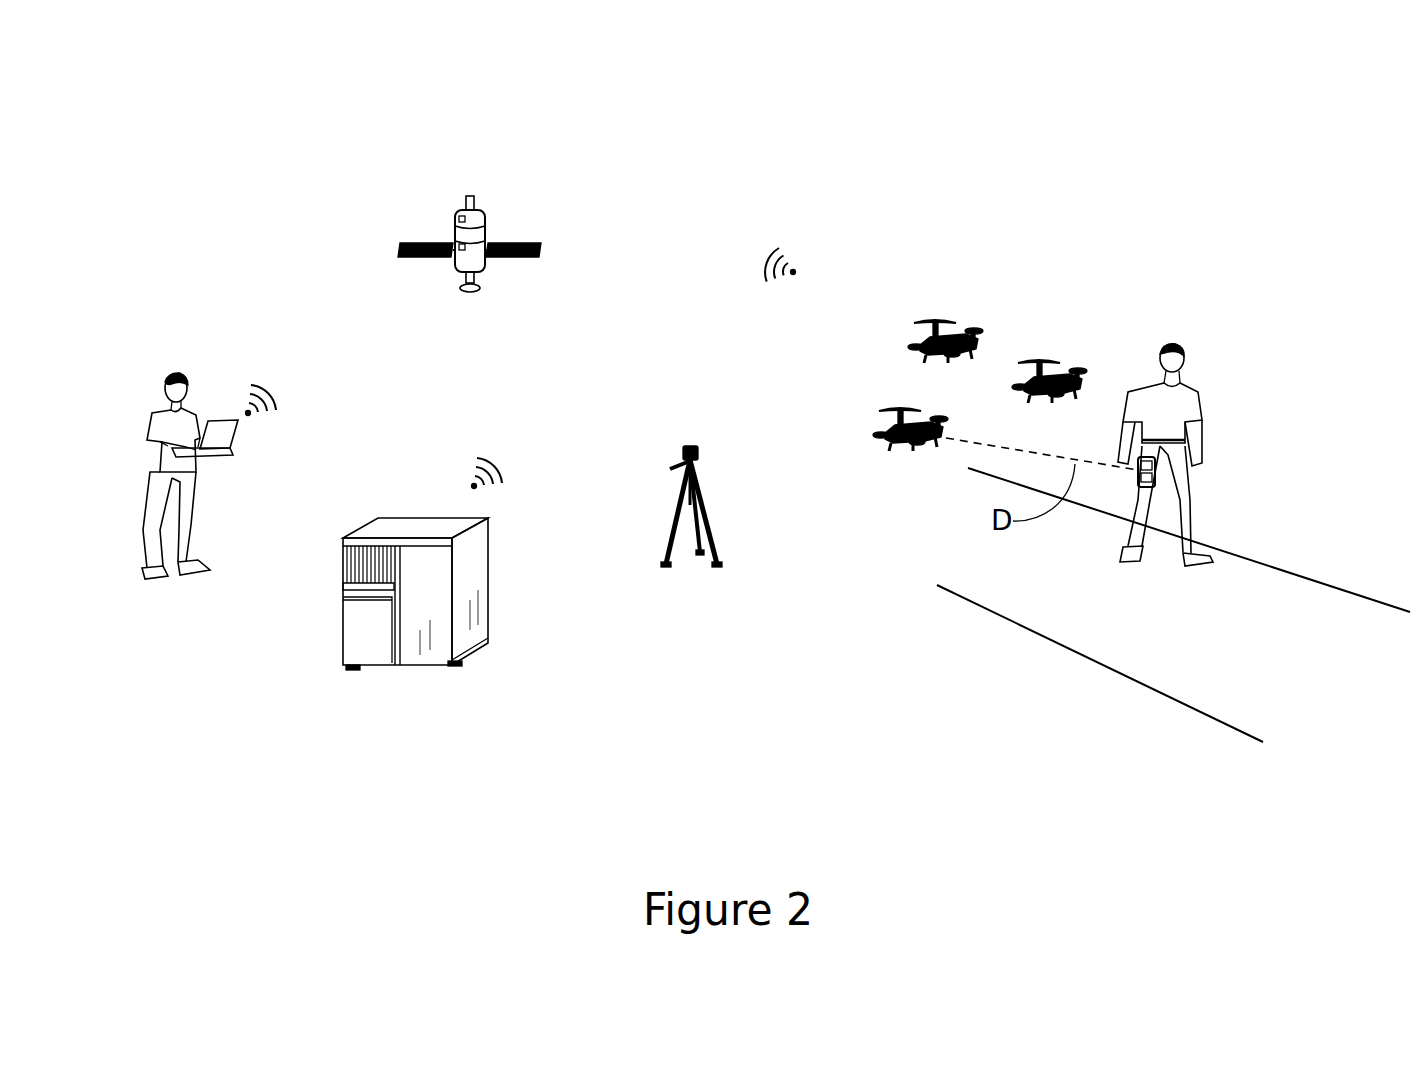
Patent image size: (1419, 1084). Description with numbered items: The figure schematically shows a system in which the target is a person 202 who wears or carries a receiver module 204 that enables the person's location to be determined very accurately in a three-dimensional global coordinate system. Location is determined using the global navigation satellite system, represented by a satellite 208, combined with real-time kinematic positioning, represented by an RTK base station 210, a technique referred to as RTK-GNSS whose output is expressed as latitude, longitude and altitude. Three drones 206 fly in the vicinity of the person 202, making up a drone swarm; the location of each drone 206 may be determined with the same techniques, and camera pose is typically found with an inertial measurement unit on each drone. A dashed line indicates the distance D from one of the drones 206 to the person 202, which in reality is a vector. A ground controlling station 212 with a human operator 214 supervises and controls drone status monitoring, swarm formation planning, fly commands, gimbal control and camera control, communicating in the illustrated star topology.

The person 202 is at (1188, 392).
The receiver module 204 is at (1135, 482).
The drones 206 is at (1081, 362).
The satellite 208 is at (487, 220).
The RTK base station 210 is at (668, 514).
The ground controlling station 212 is at (342, 563).
The human operator 214 is at (152, 413).